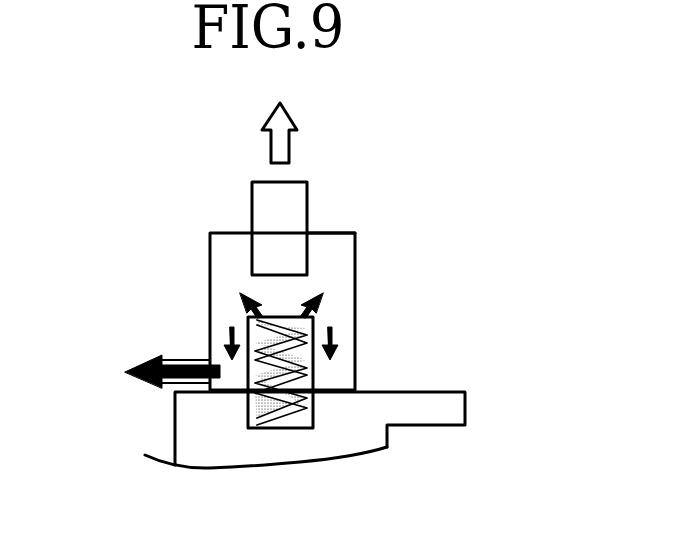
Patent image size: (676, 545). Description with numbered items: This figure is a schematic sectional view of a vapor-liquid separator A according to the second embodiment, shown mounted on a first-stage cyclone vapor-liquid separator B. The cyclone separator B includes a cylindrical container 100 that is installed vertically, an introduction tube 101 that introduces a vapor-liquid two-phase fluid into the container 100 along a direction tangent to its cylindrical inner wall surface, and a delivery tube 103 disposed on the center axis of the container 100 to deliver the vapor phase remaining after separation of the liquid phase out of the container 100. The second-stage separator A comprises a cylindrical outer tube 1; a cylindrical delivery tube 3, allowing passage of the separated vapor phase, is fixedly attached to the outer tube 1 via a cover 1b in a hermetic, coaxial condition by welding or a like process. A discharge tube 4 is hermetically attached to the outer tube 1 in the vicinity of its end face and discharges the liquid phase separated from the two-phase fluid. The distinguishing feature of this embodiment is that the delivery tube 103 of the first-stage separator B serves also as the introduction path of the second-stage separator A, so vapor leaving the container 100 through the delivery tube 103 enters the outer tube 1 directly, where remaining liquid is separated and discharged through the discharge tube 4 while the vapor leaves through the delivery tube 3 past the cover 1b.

The vapor-liquid separator A is at (150, 260).
The cyclone vapor-liquid separator B is at (148, 420).
The outer tube 1 is at (355, 257).
The cover 1b is at (328, 232).
The delivery tube 3 is at (248, 199).
The discharge tube 4 is at (192, 357).
The delivery tube 103 is at (313, 385).
The introduction tube 101 is at (465, 402).
The container 100 is at (390, 435).